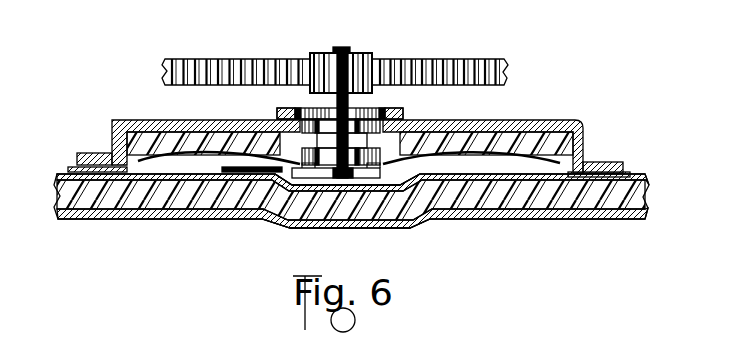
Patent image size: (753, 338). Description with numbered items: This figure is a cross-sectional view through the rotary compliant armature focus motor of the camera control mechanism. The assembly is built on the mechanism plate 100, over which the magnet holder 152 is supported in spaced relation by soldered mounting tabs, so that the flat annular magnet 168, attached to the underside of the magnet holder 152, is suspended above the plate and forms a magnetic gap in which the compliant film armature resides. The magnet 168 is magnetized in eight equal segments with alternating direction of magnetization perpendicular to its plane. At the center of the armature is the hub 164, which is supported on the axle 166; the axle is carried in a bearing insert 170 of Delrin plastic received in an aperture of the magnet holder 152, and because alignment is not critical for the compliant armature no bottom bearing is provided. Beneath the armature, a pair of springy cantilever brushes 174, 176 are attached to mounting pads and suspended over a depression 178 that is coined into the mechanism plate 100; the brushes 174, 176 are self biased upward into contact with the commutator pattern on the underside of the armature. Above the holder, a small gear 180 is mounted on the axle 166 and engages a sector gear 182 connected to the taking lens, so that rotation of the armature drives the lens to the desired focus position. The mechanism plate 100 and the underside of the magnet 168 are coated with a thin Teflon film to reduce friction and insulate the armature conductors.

The mechanism plate 100 is at (650, 206).
The magnet holder 152 is at (532, 122).
The hub 164 is at (372, 118).
The axle 166 is at (336, 101).
The flat annular magnet 168 is at (143, 138).
The bearing insert 170 is at (362, 106).
The brush 174 is at (294, 187).
The brush 176 is at (362, 228).
The depression 178 is at (393, 188).
The small gear 180 is at (338, 50).
The sector gear 182 is at (208, 63).